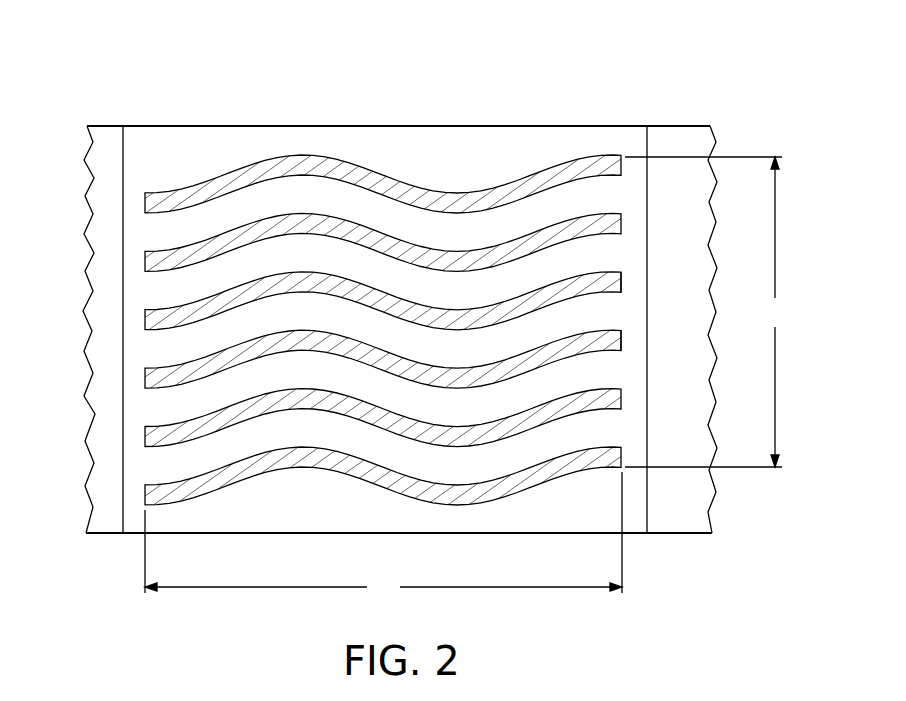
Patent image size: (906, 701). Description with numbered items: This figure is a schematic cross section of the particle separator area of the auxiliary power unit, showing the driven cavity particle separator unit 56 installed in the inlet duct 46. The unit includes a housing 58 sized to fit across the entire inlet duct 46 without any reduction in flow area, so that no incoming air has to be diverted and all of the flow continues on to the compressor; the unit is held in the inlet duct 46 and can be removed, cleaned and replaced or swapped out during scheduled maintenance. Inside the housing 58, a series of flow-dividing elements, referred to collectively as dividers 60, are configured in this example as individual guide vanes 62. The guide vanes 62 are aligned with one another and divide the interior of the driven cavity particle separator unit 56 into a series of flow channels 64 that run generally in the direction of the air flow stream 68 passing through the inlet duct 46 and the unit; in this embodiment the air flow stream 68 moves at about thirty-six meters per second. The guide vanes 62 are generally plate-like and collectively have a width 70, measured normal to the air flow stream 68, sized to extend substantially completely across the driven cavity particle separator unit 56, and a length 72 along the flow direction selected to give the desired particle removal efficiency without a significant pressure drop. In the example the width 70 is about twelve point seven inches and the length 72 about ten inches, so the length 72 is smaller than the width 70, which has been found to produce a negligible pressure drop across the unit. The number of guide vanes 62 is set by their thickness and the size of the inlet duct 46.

The driven cavity particle separator unit 56 is at (453, 305).
The housing 58 is at (510, 126).
The inlet duct 46 is at (90, 534).
The air flow stream 68 is at (112, 330).
The dividers 60 is at (453, 330).
The guide vanes 62 is at (621, 281).
The flow channels 64 is at (619, 372).
The width 70 is at (709, 312).
The length 72 is at (383, 537).